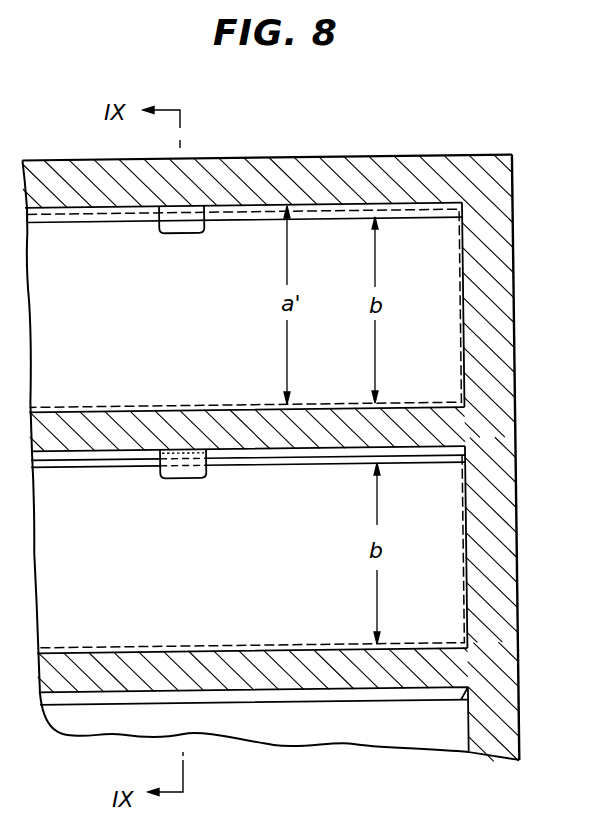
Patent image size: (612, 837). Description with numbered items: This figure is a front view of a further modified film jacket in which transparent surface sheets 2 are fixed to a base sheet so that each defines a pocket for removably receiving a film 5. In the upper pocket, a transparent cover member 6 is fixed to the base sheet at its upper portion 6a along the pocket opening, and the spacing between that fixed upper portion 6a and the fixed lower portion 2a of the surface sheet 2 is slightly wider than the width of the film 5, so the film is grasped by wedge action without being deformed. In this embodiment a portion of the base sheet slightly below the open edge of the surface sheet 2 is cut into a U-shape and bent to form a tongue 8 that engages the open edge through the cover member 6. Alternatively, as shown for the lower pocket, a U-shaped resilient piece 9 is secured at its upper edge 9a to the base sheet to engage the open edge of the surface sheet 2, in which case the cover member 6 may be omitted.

The surface sheet 2 is at (448, 277).
The lower portion of surface sheet 2a is at (415, 428).
The film 5 is at (465, 340).
The cover member 6 is at (445, 205).
The upper portion of cover member 6a is at (373, 170).
The tongue 8 is at (205, 230).
The resilient piece 9 is at (162, 478).
The upper edge of resilient piece 9a is at (207, 452).